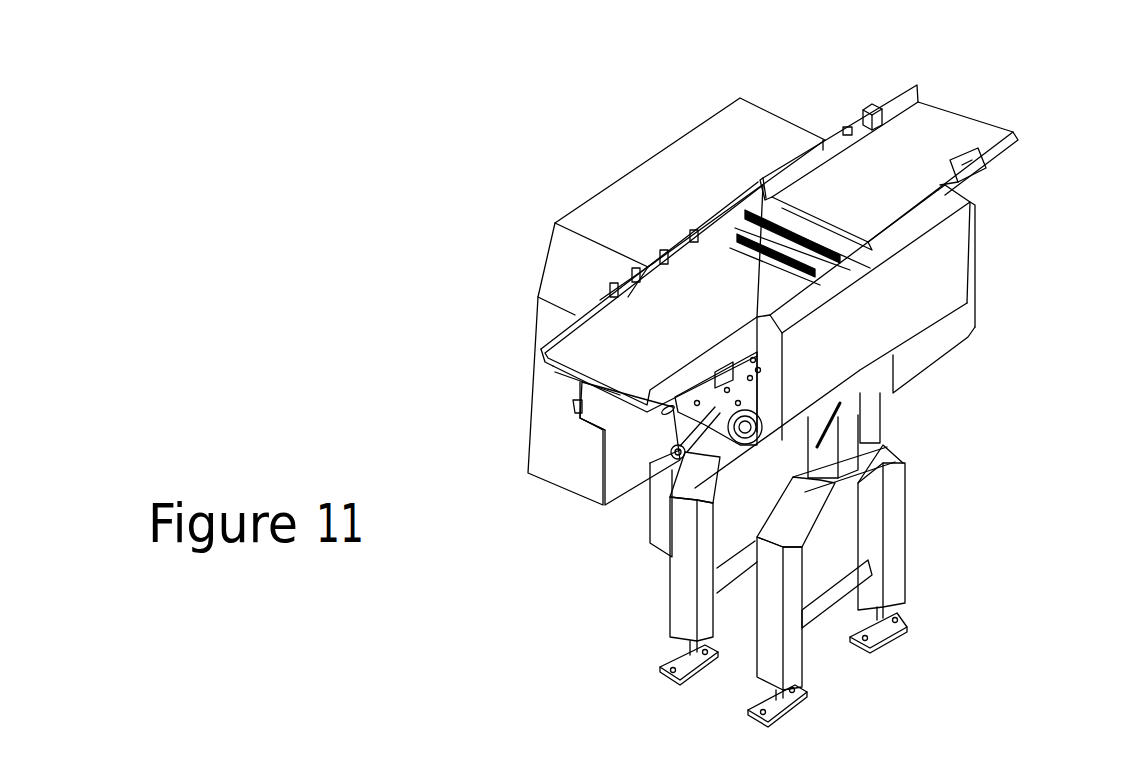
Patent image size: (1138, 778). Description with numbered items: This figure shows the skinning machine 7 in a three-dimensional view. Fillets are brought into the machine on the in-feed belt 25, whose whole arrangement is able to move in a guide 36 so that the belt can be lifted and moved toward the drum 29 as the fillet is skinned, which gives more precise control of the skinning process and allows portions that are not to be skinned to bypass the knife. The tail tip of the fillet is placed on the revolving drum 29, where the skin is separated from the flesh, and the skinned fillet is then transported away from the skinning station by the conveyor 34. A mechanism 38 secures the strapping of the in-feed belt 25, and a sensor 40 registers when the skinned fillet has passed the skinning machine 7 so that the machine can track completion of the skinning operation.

The skinning machine 7 is at (627, 137).
The in-feed belt 25 is at (620, 350).
The drum 29 is at (817, 237).
The conveyor 34 is at (948, 143).
The guide 36 is at (687, 395).
The mechanism 38 is at (686, 453).
The sensor 40 is at (973, 172).